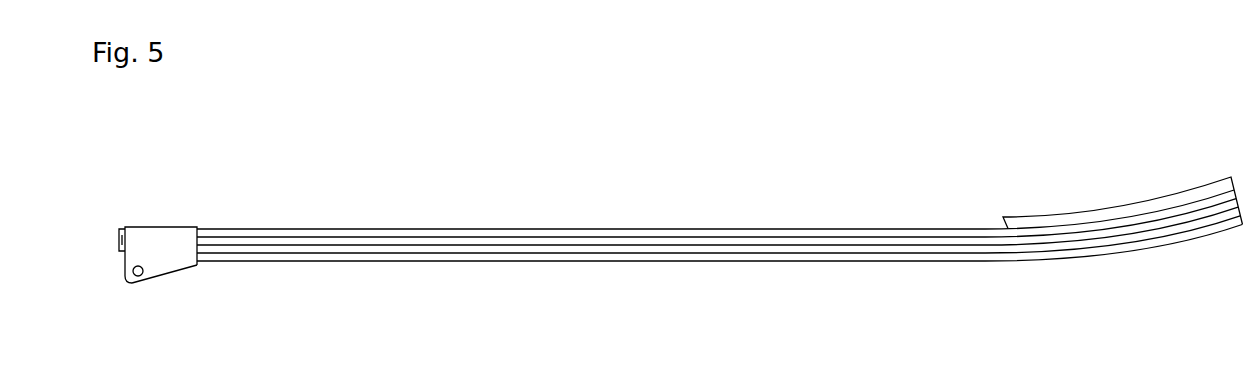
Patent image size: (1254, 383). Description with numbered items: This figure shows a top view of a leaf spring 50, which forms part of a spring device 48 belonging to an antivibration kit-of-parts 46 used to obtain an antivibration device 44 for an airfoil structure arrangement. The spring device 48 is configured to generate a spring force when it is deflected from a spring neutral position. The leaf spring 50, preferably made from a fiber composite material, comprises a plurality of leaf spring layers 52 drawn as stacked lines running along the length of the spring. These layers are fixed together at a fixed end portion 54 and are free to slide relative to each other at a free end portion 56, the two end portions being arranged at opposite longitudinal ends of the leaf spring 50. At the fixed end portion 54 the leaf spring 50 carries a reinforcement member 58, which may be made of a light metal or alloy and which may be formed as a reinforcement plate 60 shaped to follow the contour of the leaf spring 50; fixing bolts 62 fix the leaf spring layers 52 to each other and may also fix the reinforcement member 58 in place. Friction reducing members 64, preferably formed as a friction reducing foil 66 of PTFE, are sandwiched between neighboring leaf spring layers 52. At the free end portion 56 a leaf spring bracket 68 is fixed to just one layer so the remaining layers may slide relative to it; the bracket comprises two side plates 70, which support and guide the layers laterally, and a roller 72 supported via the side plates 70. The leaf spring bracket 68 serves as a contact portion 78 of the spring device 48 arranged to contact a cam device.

The antivibration device 44 is at (392, 165).
The antivibration kit-of-parts 46 is at (467, 162).
The spring device 48 is at (573, 200).
The leaf spring 50 is at (618, 224).
The leaf spring layers 52 is at (550, 258).
The fixed end portion 54 is at (1075, 195).
The free end portion 56 is at (180, 186).
The reinforcement member 58 is at (1120, 210).
The reinforcement plate 60 is at (1165, 202).
The fixing bolts 62 is at (1190, 184).
The friction reducing members 64 is at (800, 236).
The friction reducing foil 66 is at (825, 253).
The leaf spring bracket 68 is at (200, 206).
The side plates 70 is at (168, 258).
The roller 72 is at (135, 281).
The contact portion 78 is at (127, 300).